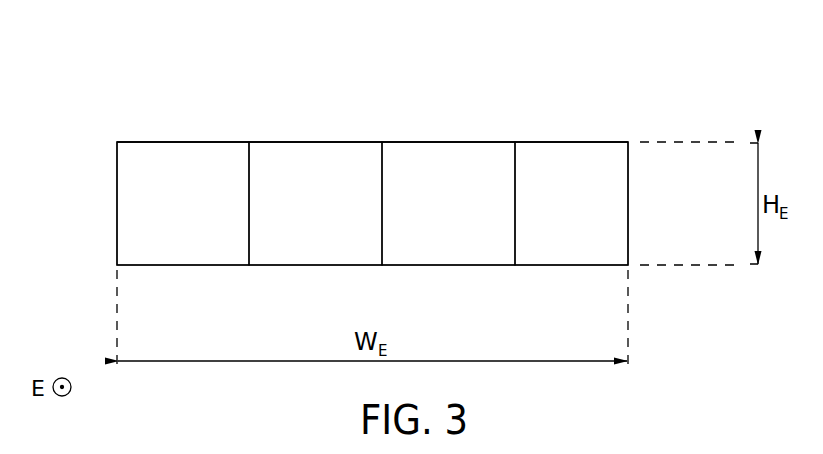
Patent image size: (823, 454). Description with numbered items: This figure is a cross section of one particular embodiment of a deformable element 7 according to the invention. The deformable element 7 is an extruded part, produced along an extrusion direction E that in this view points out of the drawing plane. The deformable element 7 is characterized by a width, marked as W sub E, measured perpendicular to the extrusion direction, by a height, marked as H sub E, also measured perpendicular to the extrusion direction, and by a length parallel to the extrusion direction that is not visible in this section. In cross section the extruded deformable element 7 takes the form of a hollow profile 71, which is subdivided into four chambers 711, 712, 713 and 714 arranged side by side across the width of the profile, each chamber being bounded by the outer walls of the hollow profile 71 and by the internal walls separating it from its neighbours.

The deformable element 7 is at (368, 112).
The hollow profile 71 is at (527, 141).
The chamber 711 is at (168, 170).
The chamber 712 is at (301, 170).
The chamber 713 is at (452, 170).
The chamber 714 is at (584, 170).